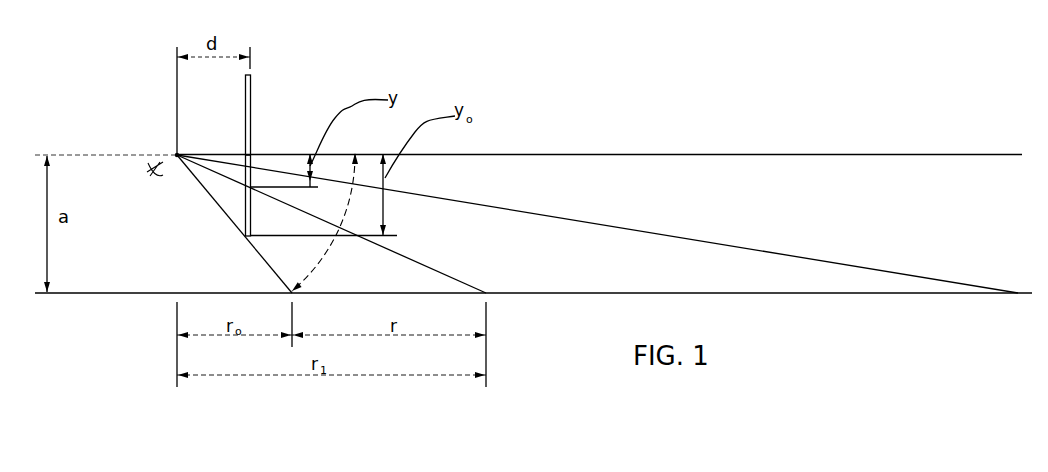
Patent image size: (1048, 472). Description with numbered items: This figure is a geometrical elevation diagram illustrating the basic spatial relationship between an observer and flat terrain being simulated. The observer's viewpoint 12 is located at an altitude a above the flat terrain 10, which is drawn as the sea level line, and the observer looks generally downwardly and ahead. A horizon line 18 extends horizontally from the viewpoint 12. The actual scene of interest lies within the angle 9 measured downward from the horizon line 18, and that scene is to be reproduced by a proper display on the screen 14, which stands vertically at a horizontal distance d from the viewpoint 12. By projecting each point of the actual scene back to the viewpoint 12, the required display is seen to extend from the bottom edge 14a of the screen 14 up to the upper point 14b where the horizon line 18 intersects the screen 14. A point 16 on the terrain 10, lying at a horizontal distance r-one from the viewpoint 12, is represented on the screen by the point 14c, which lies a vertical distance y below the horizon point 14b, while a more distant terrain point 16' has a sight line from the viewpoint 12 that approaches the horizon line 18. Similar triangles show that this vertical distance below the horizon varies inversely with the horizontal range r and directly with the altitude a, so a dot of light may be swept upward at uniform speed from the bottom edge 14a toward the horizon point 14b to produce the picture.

The angle 9 is at (328, 255).
The terrain 10 is at (212, 292).
The viewpoint 12 is at (176, 153).
The screen 14 is at (251, 101).
The bottom edge 14a is at (246, 238).
The upper point 14b is at (251, 153).
The point 14c is at (244, 190).
The point 16 is at (348, 224).
The point 16' is at (599, 224).
The horizon line 18 is at (733, 153).